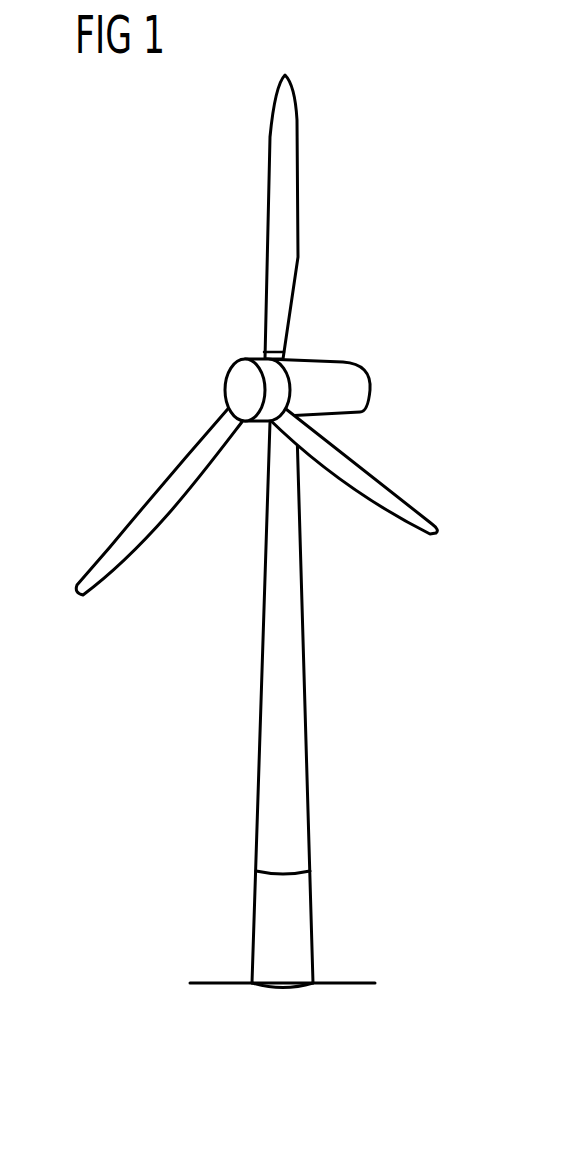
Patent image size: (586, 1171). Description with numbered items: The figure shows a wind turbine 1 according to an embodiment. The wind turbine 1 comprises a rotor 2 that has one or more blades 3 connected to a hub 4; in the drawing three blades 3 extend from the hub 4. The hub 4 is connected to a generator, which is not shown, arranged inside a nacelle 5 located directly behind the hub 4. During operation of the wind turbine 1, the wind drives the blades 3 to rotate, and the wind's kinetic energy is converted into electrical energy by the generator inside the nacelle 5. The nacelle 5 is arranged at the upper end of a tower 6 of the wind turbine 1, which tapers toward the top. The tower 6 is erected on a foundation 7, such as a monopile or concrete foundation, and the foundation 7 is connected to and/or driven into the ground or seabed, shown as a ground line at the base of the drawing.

The wind turbine 1 is at (430, 255).
The rotor 2 is at (195, 338).
The blades 3 is at (283, 198).
The hub 4 is at (233, 387).
The nacelle 5 is at (357, 382).
The tower 6 is at (297, 723).
The foundation 7 is at (302, 912).